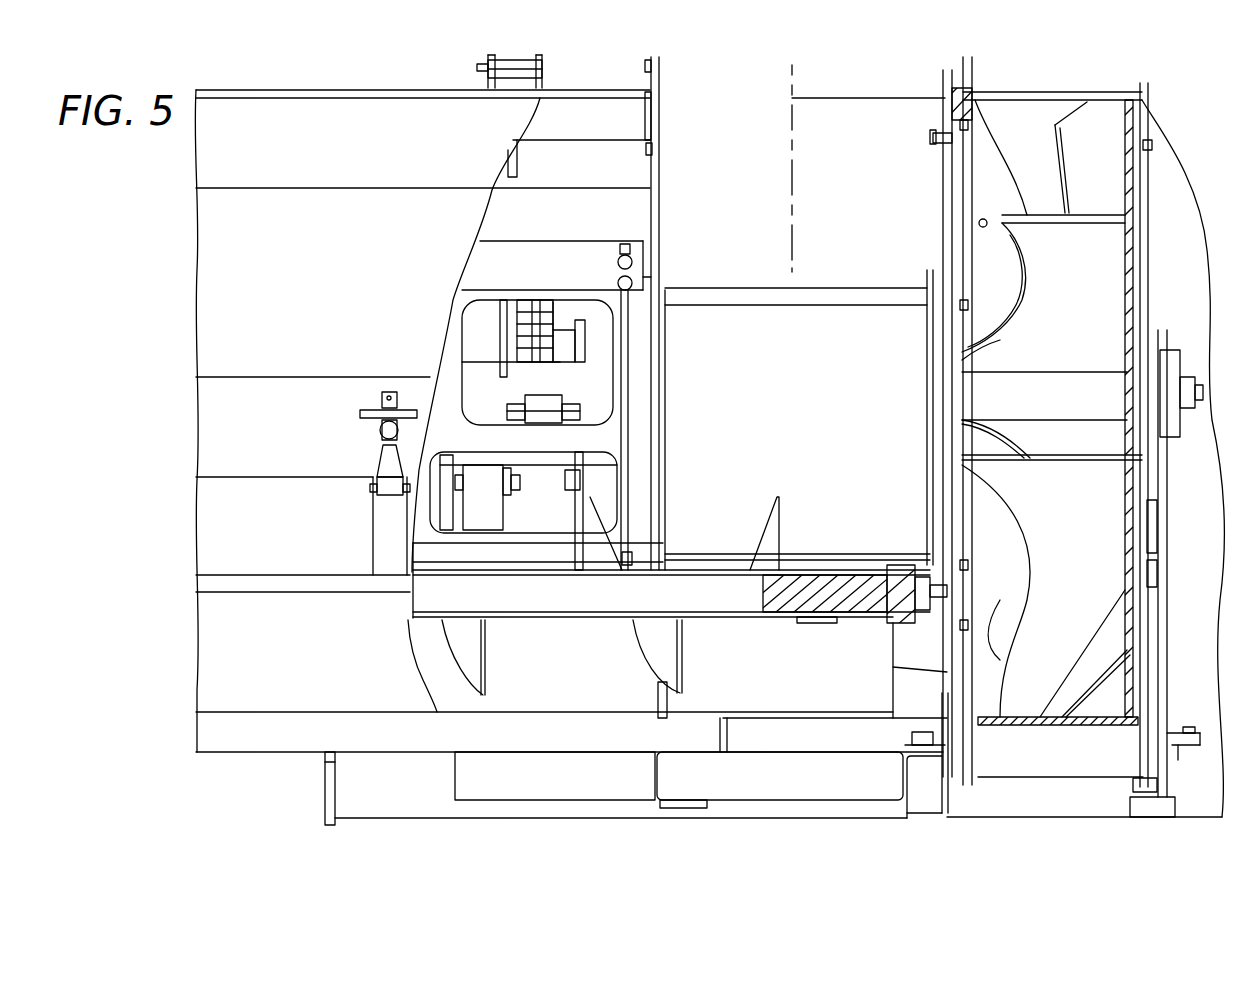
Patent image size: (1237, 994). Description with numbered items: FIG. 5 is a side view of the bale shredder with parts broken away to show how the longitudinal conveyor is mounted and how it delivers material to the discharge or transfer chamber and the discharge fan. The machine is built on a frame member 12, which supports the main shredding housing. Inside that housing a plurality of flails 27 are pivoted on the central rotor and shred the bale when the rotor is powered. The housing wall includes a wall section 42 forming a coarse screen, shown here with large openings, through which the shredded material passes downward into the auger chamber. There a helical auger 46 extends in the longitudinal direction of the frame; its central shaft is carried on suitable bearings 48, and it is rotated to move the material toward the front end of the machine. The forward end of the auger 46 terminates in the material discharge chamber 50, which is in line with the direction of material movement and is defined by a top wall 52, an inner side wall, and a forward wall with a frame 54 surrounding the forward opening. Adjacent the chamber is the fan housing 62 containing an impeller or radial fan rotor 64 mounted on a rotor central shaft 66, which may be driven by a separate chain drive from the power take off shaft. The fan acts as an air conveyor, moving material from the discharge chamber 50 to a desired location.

The frame member 12 is at (390, 735).
The flails 27 is at (543, 398).
The wall section 42 is at (492, 432).
The helical auger 46 is at (650, 633).
The bearings 48 is at (907, 567).
The material discharge chamber 50 is at (852, 340).
The top wall 52 is at (797, 287).
The frame 54 is at (938, 280).
The fan housing 62 is at (1023, 725).
The radial fan rotor 64 is at (1065, 622).
The rotor central shaft 66 is at (1037, 392).